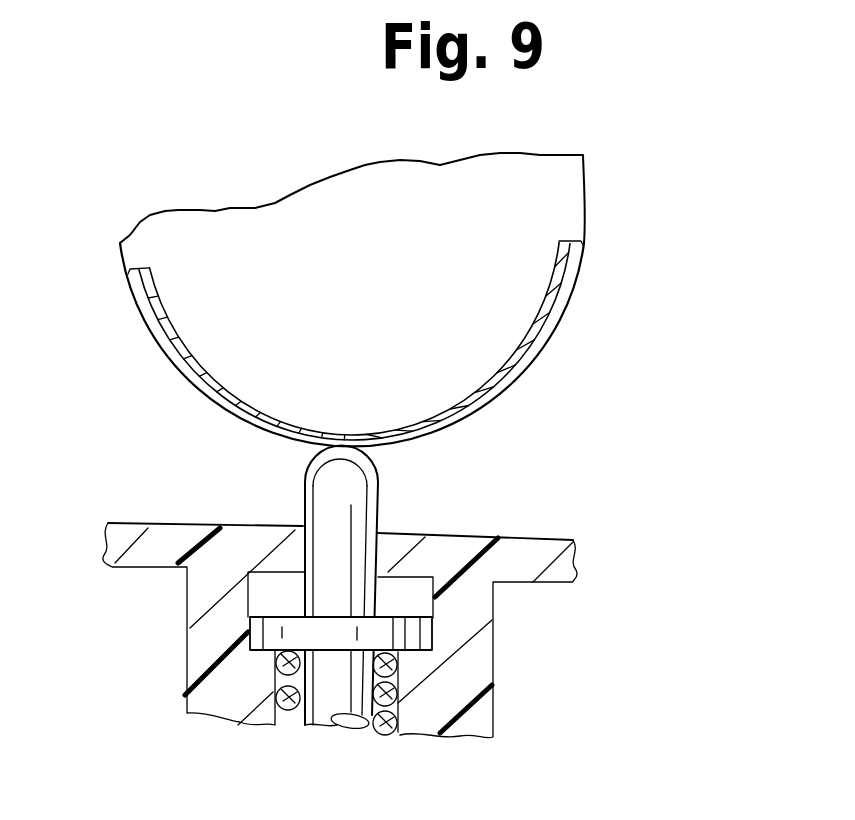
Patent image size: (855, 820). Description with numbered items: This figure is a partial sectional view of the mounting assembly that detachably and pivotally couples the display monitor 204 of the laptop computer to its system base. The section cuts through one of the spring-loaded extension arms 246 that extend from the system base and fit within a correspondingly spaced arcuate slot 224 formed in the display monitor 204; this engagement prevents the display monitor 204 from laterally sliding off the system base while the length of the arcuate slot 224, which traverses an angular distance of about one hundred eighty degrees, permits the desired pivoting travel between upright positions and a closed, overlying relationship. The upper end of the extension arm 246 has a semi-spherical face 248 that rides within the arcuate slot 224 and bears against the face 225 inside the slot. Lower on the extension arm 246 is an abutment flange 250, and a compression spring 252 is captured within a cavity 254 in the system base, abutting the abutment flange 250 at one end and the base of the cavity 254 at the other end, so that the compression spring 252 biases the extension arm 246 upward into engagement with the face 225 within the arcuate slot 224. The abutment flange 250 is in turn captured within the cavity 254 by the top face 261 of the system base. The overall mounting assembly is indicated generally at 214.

The display monitor 204 is at (543, 210).
The spring bowl assembly 214 is at (684, 294).
The arcuate slot 224 is at (543, 347).
The face 225 is at (178, 331).
The extension arm 246 is at (360, 497).
The semi-spherical face 248 is at (345, 446).
The abutment flange 250 is at (433, 619).
The compression spring 252 is at (398, 663).
The cavity 254 is at (277, 678).
The top face 261 is at (423, 540).